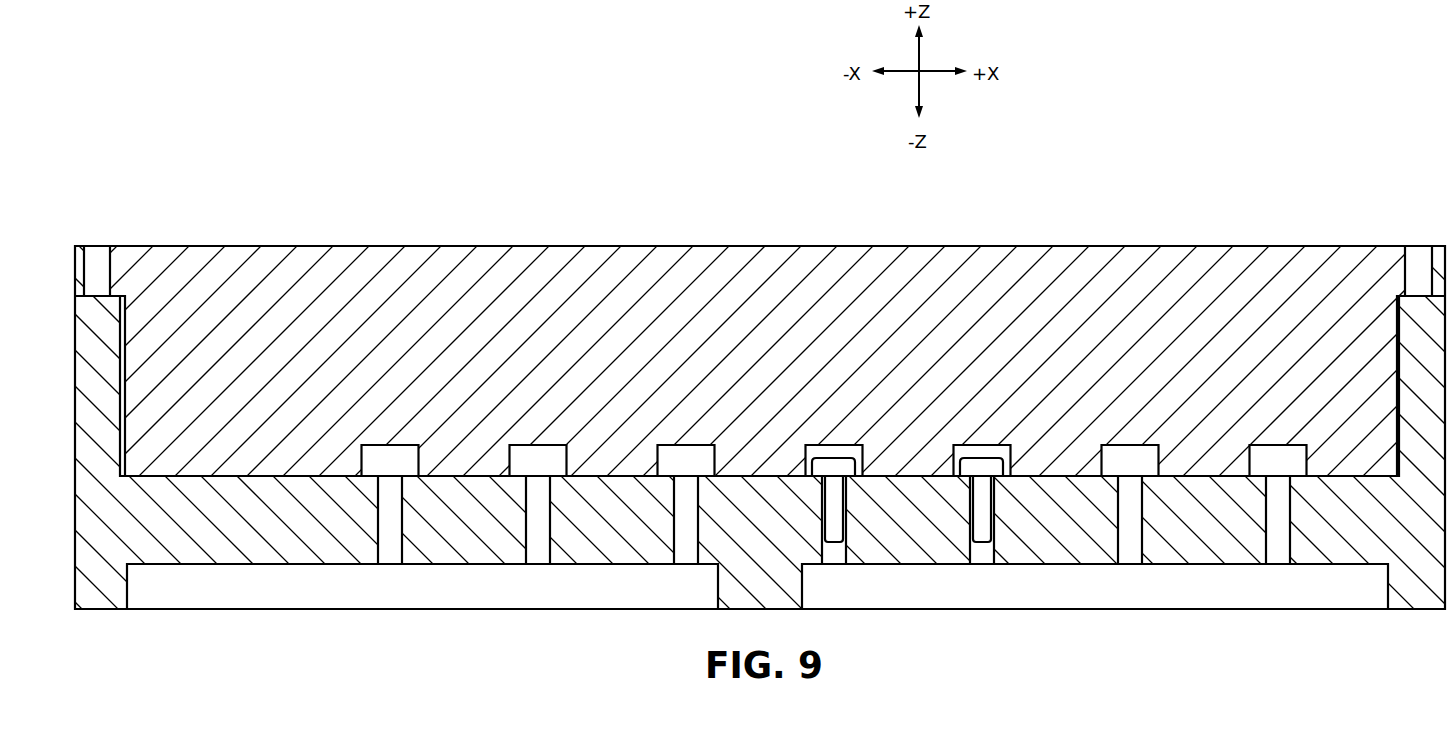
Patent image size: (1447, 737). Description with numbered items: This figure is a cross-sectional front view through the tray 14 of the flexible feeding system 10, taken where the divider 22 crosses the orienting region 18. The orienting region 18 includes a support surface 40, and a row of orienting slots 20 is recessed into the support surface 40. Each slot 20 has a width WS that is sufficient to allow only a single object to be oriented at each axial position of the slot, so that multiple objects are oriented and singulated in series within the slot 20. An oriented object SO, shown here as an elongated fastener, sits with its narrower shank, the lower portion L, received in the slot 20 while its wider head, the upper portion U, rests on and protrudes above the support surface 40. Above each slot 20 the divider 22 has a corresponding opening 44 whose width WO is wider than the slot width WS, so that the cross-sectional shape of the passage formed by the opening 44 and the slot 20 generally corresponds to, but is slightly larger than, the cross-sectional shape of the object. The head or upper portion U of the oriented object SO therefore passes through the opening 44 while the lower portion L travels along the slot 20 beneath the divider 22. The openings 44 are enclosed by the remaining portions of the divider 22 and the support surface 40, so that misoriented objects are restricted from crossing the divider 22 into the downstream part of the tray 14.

The flexible feeding system 10 is at (150, 134).
The tray 14 is at (90, 236).
The divider 22 is at (1375, 265).
The openings 44 is at (522, 457).
The orienting slots 20 is at (683, 542).
The support surface 40 is at (305, 477).
The orienting region 18 is at (621, 470).
The upper portion U is at (967, 460).
The oriented object SO is at (991, 450).
The lower portion L is at (983, 497).
The width of the opening WO is at (1316, 200).
The width of the slot WS is at (1267, 570).